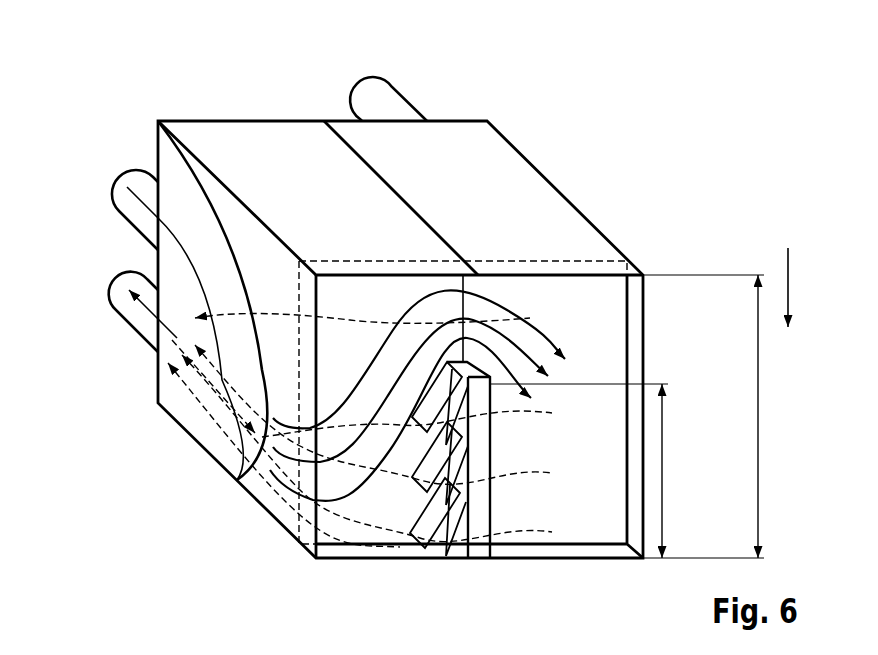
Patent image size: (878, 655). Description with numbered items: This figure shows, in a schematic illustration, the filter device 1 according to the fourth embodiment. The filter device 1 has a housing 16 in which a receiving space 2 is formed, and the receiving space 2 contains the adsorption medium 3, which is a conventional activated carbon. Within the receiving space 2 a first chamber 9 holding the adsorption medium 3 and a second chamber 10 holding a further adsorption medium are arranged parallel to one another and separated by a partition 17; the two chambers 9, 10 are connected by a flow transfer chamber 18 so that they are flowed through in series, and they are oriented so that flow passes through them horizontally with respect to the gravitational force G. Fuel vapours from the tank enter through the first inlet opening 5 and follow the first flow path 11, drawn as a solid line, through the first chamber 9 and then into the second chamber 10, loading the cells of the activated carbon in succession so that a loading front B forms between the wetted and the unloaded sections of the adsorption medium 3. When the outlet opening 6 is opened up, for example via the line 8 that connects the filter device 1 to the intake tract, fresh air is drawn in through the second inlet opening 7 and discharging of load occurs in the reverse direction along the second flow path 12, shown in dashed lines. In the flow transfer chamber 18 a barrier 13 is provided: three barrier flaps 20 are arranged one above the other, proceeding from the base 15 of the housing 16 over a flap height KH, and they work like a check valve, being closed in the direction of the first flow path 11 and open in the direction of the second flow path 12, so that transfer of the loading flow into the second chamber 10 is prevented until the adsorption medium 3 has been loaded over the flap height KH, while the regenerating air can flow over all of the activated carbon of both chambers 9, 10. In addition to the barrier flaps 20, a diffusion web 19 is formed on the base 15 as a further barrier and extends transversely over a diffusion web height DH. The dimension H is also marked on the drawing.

The filter device 1 is at (619, 163).
The receiving space 2 is at (337, 541).
The adsorption medium 3 is at (397, 313).
The first inlet opening 5 is at (151, 167).
The outlet opening 6 is at (150, 358).
The second inlet opening 7 is at (433, 118).
The line 8 is at (119, 300).
The first chamber 9 is at (387, 213).
The second chamber 10 is at (553, 213).
The first flow path 11 is at (200, 266).
The second flow path 12 is at (210, 432).
The barrier 13 is at (449, 496).
The base 15 is at (607, 533).
The housing 16 is at (507, 143).
The partition 17 is at (466, 300).
The flow transfer chamber 18 is at (603, 259).
The diffusion web 19 is at (480, 553).
The barrier flap 20 is at (405, 545).
The loading front B is at (212, 207).
The gravitational force G is at (790, 284).
The housing height H is at (760, 424).
The diffusion web height DH is at (663, 468).
The flap height KH is at (726, 493).